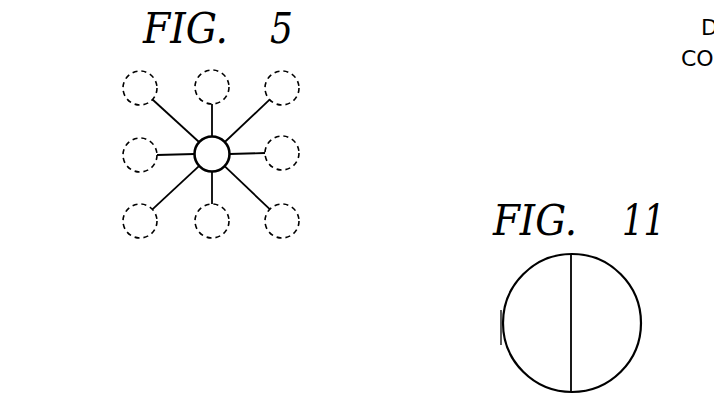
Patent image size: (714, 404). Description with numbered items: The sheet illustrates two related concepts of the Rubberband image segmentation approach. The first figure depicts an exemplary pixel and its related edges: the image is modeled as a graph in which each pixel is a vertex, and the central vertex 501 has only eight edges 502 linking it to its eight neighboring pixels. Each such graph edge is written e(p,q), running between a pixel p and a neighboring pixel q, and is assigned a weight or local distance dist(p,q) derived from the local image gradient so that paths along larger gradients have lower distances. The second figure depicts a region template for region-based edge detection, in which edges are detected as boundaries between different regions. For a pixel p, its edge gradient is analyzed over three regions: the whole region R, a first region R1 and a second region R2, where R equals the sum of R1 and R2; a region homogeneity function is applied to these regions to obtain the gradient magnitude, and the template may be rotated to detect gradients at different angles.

In FIG. 5, the vertex 501 is at (288, 155).
In FIG. 5, the edges 502 is at (233, 193).
In FIG. 5, the pixel p is at (212, 154).
In FIG. 5, the neighboring pixel q is at (282, 88).
In FIG. 11, the first region R1 is at (536, 323).
In FIG. 11, the second region R2 is at (606, 323).